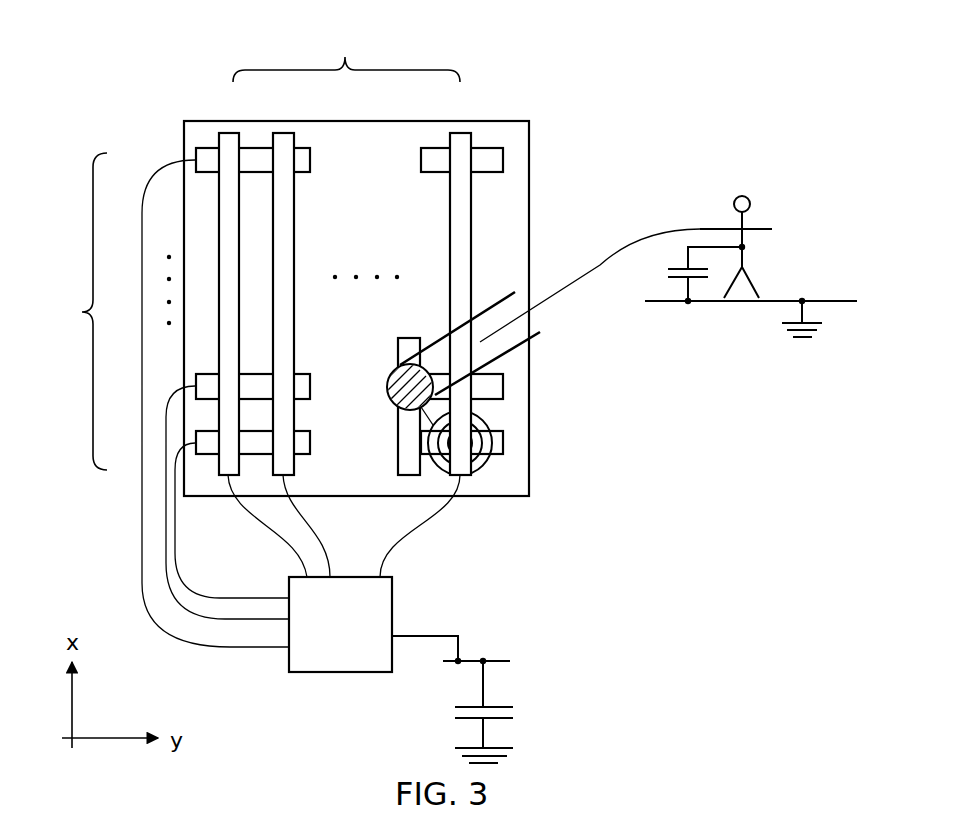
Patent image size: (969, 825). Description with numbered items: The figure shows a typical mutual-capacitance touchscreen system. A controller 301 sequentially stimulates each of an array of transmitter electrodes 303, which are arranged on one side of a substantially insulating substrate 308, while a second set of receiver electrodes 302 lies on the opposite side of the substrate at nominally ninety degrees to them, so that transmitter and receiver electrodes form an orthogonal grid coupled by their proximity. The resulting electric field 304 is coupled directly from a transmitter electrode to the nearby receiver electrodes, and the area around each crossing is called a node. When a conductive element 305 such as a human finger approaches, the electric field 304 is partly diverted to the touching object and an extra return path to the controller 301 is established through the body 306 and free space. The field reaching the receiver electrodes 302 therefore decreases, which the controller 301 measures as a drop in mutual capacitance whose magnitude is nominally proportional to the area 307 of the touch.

The controller 301 is at (330, 672).
The receiver electrodes 302 is at (345, 237).
The transmitter electrodes 303 is at (263, 309).
The electric field 304 is at (480, 467).
The conductive element 305 is at (409, 411).
The body 306 is at (752, 222).
The area of the touch 307 is at (391, 377).
The substantially insulating substrate 308 is at (532, 133).